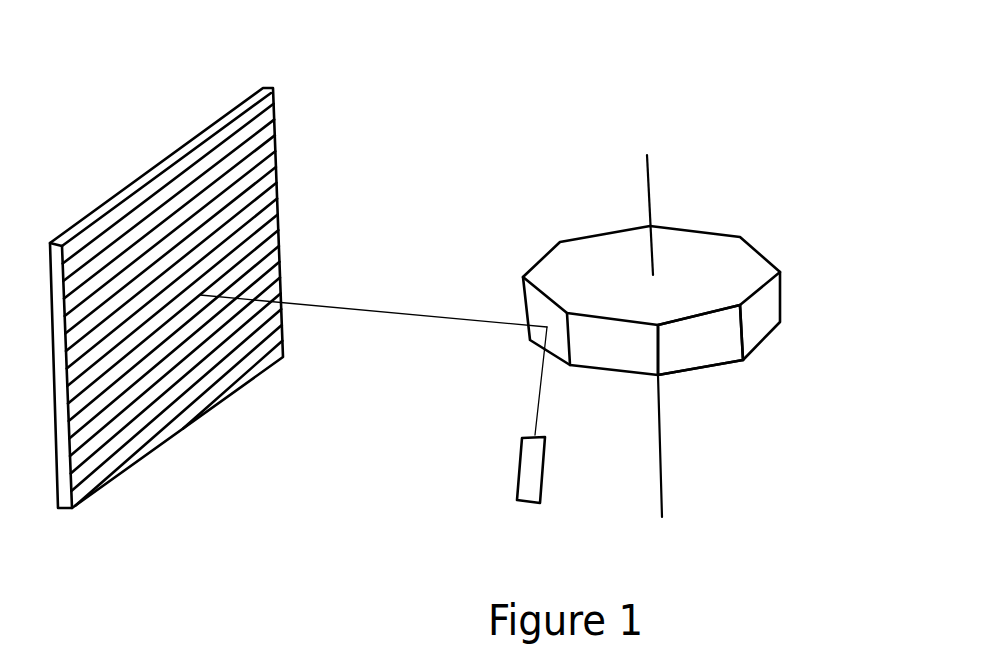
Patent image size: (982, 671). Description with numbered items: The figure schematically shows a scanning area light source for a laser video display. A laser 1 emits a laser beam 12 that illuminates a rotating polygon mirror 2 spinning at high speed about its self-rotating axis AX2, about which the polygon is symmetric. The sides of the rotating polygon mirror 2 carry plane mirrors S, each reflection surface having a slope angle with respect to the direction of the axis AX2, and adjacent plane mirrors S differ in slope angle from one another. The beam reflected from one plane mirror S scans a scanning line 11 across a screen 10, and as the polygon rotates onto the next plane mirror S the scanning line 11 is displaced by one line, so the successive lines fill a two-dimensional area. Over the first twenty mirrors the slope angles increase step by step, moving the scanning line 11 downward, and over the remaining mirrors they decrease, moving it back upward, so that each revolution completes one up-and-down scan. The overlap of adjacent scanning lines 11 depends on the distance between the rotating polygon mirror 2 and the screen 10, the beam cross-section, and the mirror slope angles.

The screen 10 is at (273, 88).
The scanning line 11 is at (283, 240).
The laser beam 12 is at (540, 383).
The rotating polygon mirror 2 is at (717, 270).
The plane mirror S is at (708, 342).
The self-rotating axis AX2 is at (652, 183).
The laser 1 is at (532, 478).